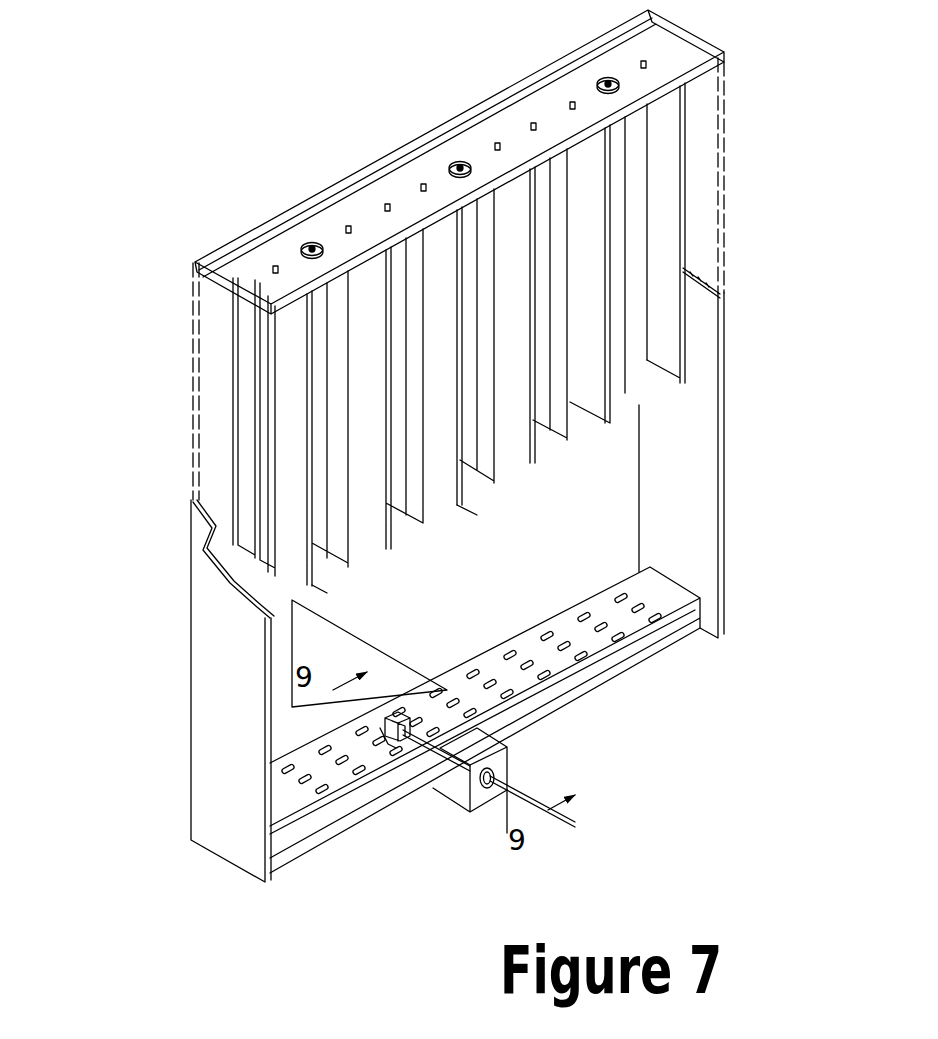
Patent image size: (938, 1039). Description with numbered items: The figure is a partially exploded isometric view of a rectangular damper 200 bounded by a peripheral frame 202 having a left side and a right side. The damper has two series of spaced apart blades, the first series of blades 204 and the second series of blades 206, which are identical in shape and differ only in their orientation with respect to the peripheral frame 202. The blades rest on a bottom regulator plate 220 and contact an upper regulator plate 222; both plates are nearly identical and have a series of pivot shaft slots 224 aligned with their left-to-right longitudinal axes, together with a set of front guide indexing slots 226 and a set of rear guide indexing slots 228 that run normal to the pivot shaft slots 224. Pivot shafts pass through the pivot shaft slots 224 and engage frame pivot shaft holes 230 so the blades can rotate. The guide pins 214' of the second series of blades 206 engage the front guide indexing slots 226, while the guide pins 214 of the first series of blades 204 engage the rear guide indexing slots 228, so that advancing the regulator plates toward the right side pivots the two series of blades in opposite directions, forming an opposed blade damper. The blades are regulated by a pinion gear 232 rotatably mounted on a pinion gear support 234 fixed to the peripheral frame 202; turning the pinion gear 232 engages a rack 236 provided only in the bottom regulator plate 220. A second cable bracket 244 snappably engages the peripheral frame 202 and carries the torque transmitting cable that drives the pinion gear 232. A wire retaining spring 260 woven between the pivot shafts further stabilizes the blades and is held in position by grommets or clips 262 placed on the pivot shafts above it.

The rectangular damper 200 is at (315, 84).
The peripheral frame 202 is at (165, 390).
The blades (first series of spaced apart blades) 204 is at (600, 86).
The blades (second series of spaced apart blades) 206 is at (505, 521).
The guide pins 214 is at (163, 427).
The guide pins 214' is at (496, 343).
The bottom regulator plate 220 is at (392, 745).
The upper regulator plate 222 is at (690, 78).
The pivot shaft slots 224 is at (600, 614).
The front guide indexing slots 226 is at (630, 642).
The rear guide indexing slots 228 is at (548, 633).
The frame pivot shaft holes 230 is at (643, 62).
The pinion gear 232 is at (407, 735).
The pinion gear support 234 is at (385, 738).
The rack 236 is at (402, 742).
The second cable bracket 244 is at (482, 800).
The wire retaining spring 260 is at (283, 267).
The grommets or clips 262 is at (312, 240).